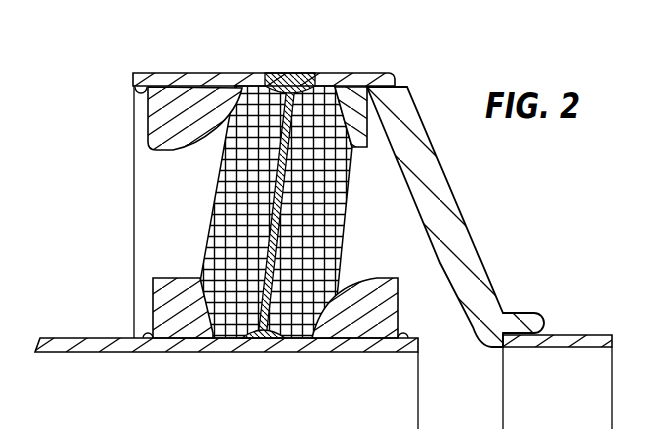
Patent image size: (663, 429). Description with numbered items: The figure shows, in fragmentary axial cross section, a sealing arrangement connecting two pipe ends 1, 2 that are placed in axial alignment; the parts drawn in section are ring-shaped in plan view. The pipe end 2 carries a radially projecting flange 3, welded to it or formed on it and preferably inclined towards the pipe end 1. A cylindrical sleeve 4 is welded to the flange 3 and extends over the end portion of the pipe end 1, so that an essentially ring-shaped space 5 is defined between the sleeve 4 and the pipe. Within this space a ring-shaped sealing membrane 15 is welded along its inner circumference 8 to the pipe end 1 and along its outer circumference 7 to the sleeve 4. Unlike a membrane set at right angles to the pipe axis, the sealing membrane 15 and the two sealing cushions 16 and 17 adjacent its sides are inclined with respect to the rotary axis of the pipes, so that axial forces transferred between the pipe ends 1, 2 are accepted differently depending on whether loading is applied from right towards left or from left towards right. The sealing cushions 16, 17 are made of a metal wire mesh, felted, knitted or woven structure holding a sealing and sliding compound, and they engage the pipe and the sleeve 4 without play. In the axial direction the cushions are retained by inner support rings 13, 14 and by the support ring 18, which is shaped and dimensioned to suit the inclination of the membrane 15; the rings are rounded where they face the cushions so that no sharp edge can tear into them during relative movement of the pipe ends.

The pipe end 1 is at (69, 353).
The pipe end 2 is at (572, 333).
The flange 3 is at (436, 160).
The cylindrical sleeve 4 is at (172, 76).
The ring-shaped space 5 is at (140, 199).
The outer circumference 7 is at (293, 76).
The inner circumference 8 is at (258, 348).
The inner support ring 13 is at (168, 332).
The inner support ring 14 is at (373, 325).
The sealing membrane 15 is at (278, 143).
The sealing cushion 16 is at (227, 313).
The sealing cushion 17 is at (298, 313).
The support ring 18 is at (356, 92).